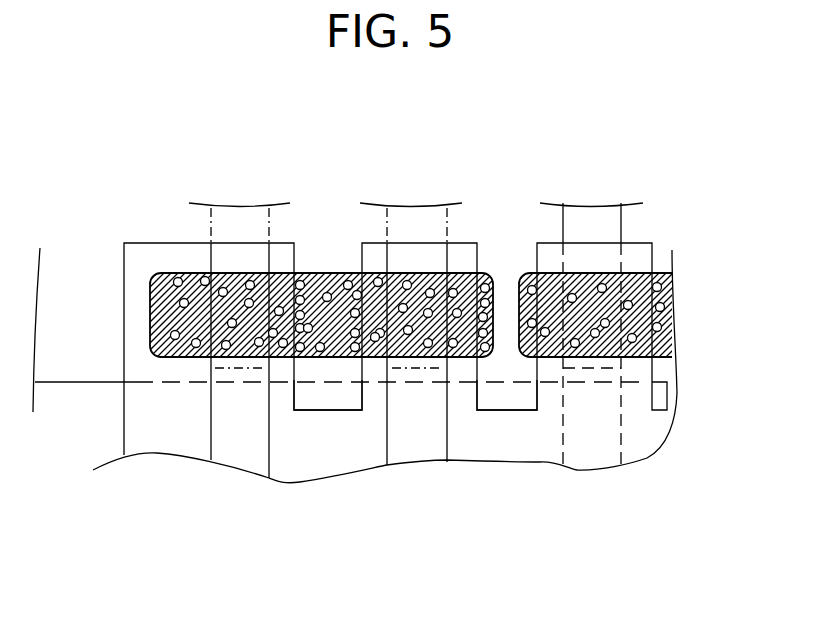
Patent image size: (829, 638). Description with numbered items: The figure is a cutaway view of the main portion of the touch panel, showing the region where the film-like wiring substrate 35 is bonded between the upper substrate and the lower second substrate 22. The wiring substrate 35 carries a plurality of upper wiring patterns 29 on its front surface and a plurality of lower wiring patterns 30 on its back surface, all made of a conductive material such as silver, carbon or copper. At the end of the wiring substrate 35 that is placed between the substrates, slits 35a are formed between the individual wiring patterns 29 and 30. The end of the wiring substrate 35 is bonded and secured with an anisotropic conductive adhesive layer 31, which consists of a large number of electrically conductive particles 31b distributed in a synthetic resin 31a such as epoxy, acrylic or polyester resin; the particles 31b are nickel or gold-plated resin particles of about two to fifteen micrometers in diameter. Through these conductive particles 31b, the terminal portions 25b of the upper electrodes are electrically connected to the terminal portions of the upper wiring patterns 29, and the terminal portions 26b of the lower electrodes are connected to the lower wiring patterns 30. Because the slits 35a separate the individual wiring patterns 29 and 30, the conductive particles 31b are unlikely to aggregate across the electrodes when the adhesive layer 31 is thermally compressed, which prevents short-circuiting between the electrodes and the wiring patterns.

The second substrate 22 is at (104, 353).
The terminal portions of electrodes 25 25b is at (240, 223).
The terminal portions of electrodes 26 26b is at (591, 223).
The upper wiring patterns 29 is at (241, 412).
The lower wiring patterns 30 is at (590, 417).
The anisotropic conductive adhesive layer 31 is at (186, 357).
The synthetic resin 31a is at (672, 347).
The electrically conductive particles 31b is at (660, 305).
The wiring substrate 35 is at (635, 407).
The slits 35a is at (330, 398).